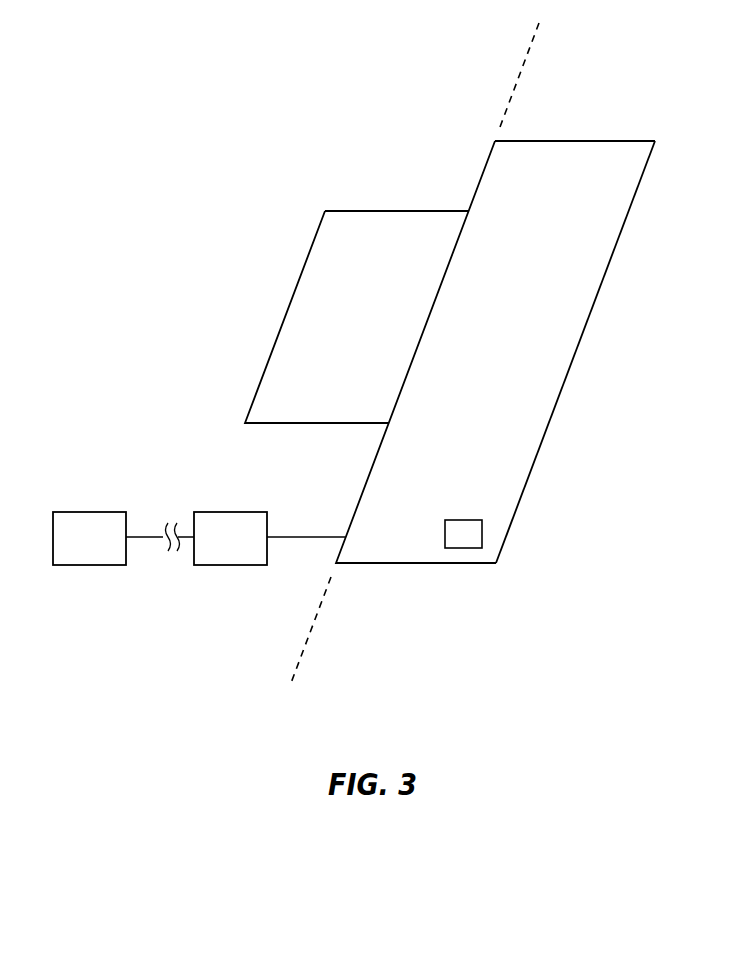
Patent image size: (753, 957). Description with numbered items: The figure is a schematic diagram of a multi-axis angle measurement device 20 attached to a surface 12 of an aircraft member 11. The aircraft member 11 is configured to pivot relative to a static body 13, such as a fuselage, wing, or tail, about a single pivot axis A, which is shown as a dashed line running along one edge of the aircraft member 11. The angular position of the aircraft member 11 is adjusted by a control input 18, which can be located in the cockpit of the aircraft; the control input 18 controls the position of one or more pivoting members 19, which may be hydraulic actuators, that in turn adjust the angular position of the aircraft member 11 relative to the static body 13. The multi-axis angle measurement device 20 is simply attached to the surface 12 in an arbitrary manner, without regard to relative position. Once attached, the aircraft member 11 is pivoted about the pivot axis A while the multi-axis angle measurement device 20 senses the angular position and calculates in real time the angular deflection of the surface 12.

The pivot axis A is at (533, 38).
The aircraft member 11 is at (572, 162).
The surface 12 is at (572, 288).
The static body 13 is at (325, 274).
The control input 18 is at (100, 548).
The pivoting members 19 is at (242, 548).
The multi-axis angle measurement device 20 is at (465, 533).